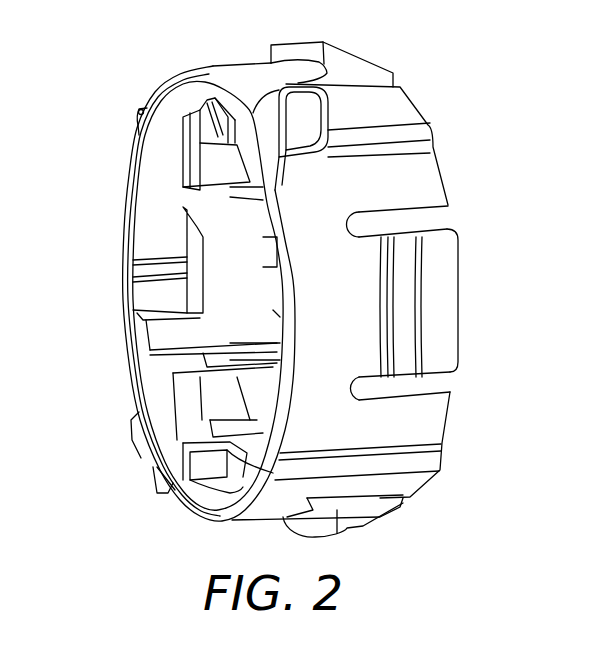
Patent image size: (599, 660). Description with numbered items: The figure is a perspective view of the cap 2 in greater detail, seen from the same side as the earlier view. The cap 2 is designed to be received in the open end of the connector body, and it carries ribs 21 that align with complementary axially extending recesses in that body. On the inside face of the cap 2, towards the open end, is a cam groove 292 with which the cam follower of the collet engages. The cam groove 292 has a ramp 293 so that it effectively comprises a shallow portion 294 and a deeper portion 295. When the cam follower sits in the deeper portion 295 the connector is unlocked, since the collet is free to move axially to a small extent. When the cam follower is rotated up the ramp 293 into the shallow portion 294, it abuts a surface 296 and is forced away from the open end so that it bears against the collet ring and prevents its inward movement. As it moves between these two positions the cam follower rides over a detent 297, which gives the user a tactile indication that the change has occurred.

The cap 2 is at (443, 76).
The ribs 21 is at (139, 120).
The cam groove 292 is at (150, 215).
The ramp 293 is at (193, 233).
The shallow portion 294 is at (162, 157).
The deeper portion 295 is at (147, 300).
The surface 296 is at (197, 140).
The detent 297 is at (145, 275).